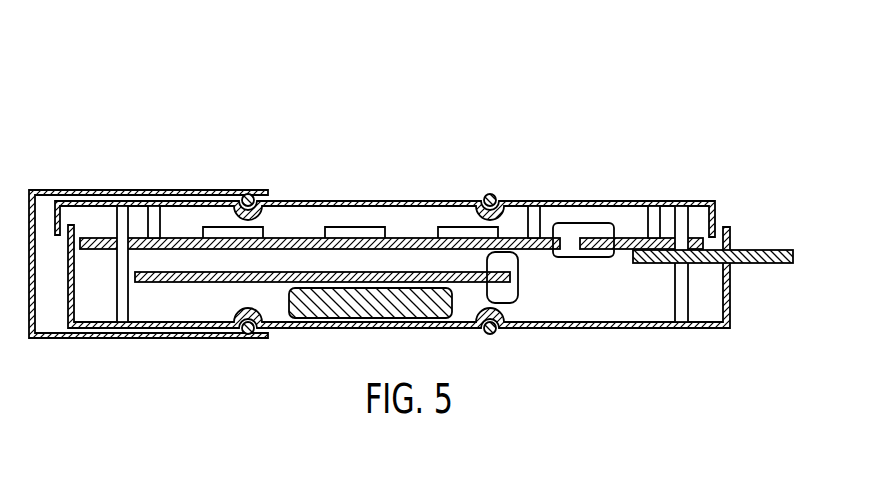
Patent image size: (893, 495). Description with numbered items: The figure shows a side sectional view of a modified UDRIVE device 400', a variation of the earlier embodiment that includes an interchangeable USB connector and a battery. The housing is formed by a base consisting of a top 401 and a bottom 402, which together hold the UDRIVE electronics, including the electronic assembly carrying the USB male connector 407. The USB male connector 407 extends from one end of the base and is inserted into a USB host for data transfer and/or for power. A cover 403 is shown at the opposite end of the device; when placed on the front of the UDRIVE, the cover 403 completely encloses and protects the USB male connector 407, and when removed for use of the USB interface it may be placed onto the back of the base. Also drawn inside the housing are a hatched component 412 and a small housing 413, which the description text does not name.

The modified UDRIVE device 400' is at (409, 181).
The top 401 is at (708, 200).
The bottom 402 is at (730, 295).
The cover 403 is at (44, 190).
The USB male connector 407 is at (757, 250).
The thermal pad 412 is at (288, 305).
The sensor housing 413 is at (582, 258).